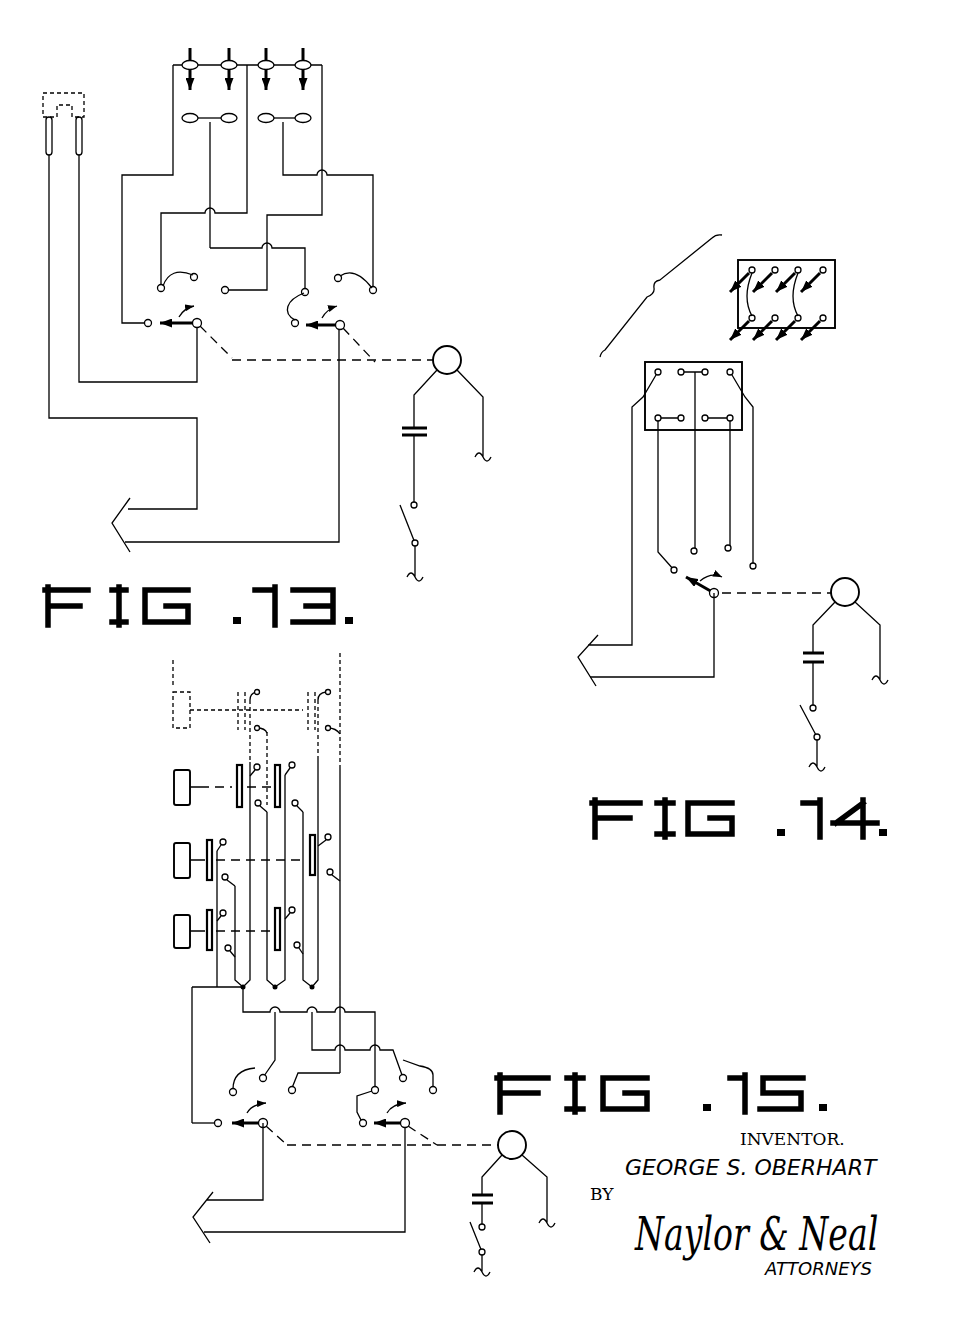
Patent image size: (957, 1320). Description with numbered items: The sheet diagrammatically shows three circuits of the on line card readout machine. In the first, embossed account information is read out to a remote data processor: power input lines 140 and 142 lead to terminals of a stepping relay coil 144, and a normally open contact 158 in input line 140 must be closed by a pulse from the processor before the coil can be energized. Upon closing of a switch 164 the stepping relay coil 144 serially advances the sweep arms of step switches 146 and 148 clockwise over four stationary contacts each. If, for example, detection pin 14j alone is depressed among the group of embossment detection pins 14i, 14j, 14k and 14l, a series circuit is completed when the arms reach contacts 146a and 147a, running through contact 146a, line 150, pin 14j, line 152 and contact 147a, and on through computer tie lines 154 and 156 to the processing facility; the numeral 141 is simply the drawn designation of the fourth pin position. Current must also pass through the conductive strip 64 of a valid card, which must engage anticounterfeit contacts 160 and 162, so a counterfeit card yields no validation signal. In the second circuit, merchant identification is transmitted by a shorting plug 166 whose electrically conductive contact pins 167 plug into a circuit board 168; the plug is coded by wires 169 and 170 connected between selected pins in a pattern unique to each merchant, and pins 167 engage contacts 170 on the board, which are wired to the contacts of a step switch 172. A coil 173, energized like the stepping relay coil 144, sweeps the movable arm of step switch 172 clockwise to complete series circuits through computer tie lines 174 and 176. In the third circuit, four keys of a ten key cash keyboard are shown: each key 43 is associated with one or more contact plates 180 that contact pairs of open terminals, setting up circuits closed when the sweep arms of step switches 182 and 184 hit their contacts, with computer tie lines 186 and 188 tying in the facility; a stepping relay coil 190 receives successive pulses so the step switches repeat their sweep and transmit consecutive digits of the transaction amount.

In FIG. 13, the strip of electrically conductive material 64 is at (66, 93).
In FIG. 13, the anticounterfeit contact 160 is at (47, 143).
In FIG. 13, the anticounterfeit contact 162 is at (82, 143).
In FIG. 13, the embossment detection pin 14i is at (188, 60).
In FIG. 13, the embossment detection pin 14j is at (222, 62).
In FIG. 13, the embossment detection pin 14k is at (264, 60).
In FIG. 13, the embossment detection pin 14l is at (310, 62).
In FIG. 13, the sensing switch 141 is at (334, 63).
In FIG. 13, the line 152 is at (210, 165).
In FIG. 13, the line 150 is at (198, 215).
In FIG. 13, the contact 146a is at (160, 290).
In FIG. 13, the contact 147a is at (307, 288).
In FIG. 13, the step switch 146 is at (174, 331).
In FIG. 13, the step switch 148 is at (318, 331).
In FIG. 13, the stepping relay coil 144 is at (458, 350).
In FIG. 13, the contact 158 is at (404, 427).
In FIG. 13, the power input line 142 is at (484, 427).
In FIG. 13, the power input line 140 is at (415, 483).
In FIG. 13, the switch 164 is at (418, 543).
In FIG. 13, the computer tie line 154 is at (163, 509).
In FIG. 13, the computer tie line 156 is at (212, 541).
In FIG. 14, the shorting plug 166 is at (766, 262).
In FIG. 14, the contact pins 167 is at (827, 273).
In FIG. 14, the wire 169 is at (746, 294).
In FIG. 14, the contacts 170 is at (802, 294).
In FIG. 14, the circuit board 168 is at (685, 361).
In FIG. 14, the step switch 172 is at (740, 581).
In FIG. 14, the coil 173 is at (850, 580).
In FIG. 14, the computer tie line 174 is at (615, 644).
In FIG. 14, the computer tie line 176 is at (649, 678).
In FIG. 15, the key 43 is at (174, 780).
In FIG. 15, the contact plate 180 is at (282, 936).
In FIG. 15, the step switch 182 is at (252, 1131).
In FIG. 15, the step switch 184 is at (393, 1132).
In FIG. 15, the computer tie line 186 is at (265, 1192).
In FIG. 15, the computer tie line 188 is at (308, 1237).
In FIG. 15, the stepping relay coil 190 is at (527, 1145).